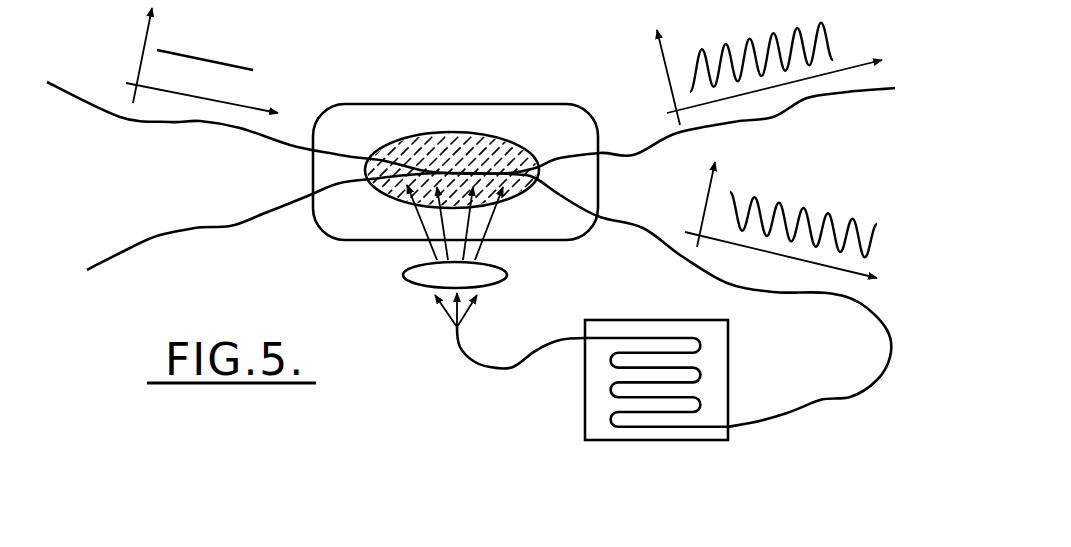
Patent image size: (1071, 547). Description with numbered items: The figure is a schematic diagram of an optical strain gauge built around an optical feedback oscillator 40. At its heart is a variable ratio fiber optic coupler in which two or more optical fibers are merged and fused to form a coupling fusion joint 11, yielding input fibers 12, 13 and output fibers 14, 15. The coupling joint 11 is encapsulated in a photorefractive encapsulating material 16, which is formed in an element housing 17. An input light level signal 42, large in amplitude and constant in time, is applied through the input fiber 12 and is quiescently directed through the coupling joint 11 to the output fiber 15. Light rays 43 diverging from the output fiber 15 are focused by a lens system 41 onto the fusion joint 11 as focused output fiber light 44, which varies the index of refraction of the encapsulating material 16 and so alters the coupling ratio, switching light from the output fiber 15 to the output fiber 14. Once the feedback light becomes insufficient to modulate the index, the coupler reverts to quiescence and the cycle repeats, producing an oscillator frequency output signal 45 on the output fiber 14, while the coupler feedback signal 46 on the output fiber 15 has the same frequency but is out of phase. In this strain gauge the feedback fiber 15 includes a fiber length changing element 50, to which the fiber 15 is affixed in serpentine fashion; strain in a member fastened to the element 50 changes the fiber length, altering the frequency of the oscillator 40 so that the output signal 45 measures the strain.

The coupling fusion joint 11 is at (430, 157).
The input fiber 12 is at (72, 92).
The input fiber 13 is at (178, 230).
The output fiber 14 is at (803, 107).
The output fiber 15 is at (500, 368).
The encapsulating material 16 is at (497, 140).
The element housing 17 is at (567, 104).
The optical feedback oscillator 40 is at (454, 157).
The lens system 41 is at (507, 278).
The input light level signal 42 is at (215, 58).
The light rays 43 is at (433, 317).
The focused output fiber light 44 is at (410, 220).
The oscillator frequency output signal 45 is at (850, 33).
The coupler feedback signal 46 is at (830, 207).
The fiber length changing element 50 is at (728, 358).